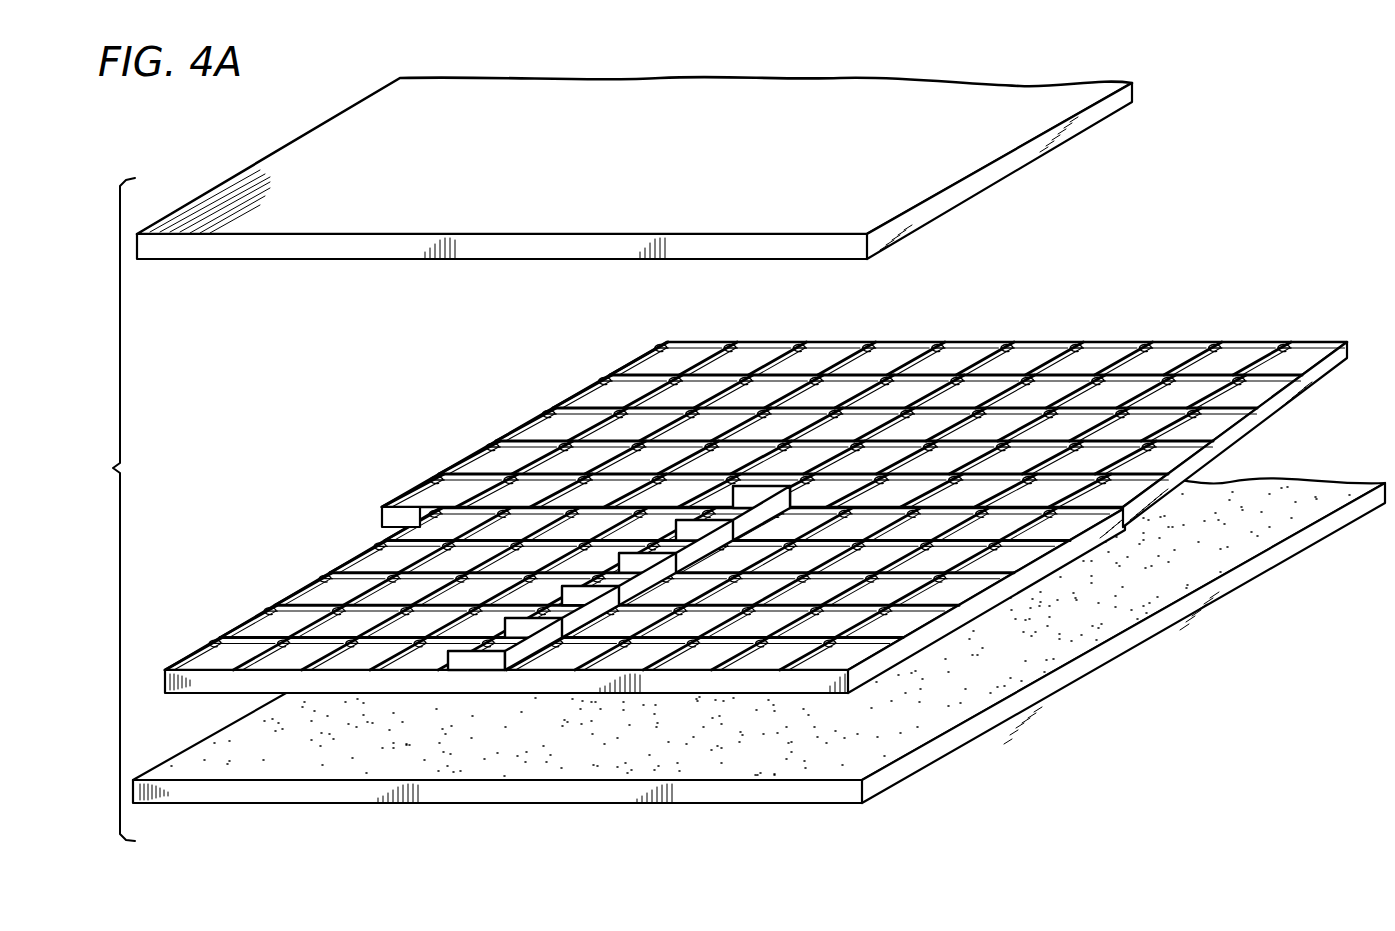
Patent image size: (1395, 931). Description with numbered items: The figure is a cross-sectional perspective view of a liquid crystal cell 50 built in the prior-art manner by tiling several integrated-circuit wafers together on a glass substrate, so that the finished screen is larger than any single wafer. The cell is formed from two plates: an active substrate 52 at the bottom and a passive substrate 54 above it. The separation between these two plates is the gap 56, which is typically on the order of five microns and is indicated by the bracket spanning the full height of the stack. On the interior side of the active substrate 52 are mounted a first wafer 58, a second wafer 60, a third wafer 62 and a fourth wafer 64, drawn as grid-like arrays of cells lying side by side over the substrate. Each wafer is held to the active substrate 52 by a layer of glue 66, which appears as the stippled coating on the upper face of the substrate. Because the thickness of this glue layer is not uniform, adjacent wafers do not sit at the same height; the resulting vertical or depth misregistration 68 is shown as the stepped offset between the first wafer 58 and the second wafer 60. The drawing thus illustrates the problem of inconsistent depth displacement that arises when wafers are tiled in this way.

The liquid crystal cell 50 is at (759, 474).
The active substrate 52 is at (272, 793).
The passive substrate 54 is at (232, 208).
The gap 56 is at (106, 509).
The first wafer 58 is at (645, 618).
The second wafer 60 is at (410, 663).
The third wafer 62 is at (864, 434).
The fourth wafer 64 is at (530, 425).
The layer of glue 66 is at (893, 752).
The depth misregistration 68 is at (528, 655).